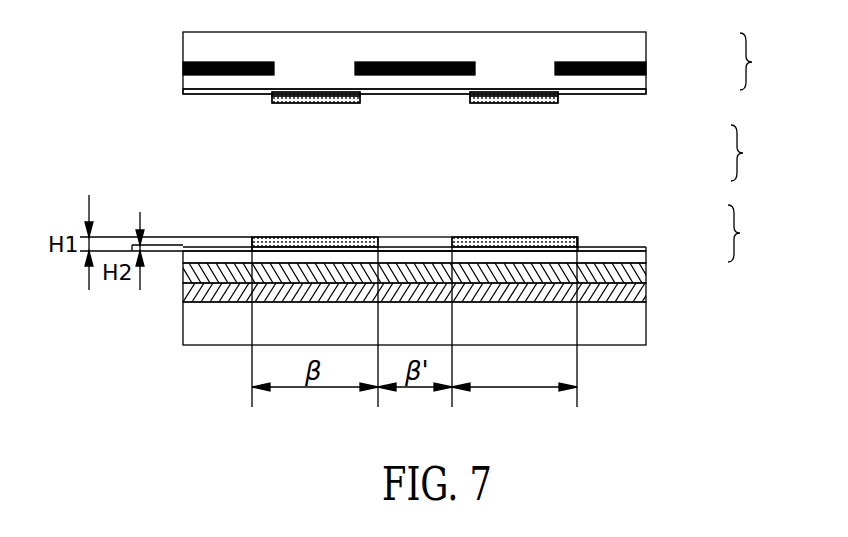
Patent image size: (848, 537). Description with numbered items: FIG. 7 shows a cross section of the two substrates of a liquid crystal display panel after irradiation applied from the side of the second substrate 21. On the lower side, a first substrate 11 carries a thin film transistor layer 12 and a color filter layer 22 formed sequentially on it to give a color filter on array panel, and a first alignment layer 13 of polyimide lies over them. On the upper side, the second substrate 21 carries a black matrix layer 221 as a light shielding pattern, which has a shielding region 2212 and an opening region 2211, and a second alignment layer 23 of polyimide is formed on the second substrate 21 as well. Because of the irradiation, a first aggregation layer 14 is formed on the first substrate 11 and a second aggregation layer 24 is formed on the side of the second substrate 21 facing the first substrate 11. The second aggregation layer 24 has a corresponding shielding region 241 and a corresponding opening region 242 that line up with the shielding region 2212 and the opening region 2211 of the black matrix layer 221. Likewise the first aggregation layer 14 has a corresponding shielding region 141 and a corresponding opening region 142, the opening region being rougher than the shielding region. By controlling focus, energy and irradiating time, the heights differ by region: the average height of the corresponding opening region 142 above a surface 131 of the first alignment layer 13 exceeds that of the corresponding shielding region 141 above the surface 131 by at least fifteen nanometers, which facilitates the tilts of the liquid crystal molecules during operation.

The second substrate 21 is at (638, 43).
The shielding region 2212 is at (647, 68).
The opening region 2211 is at (650, 77).
The black matrix layer 221 is at (769, 61).
The second alignment layer 23 is at (648, 90).
The corresponding shielding region 241 is at (632, 96).
The corresponding opening region 242 is at (557, 102).
The second aggregation layer 24 is at (522, 136).
The first substrate 11 is at (640, 335).
The thin film transistor layer 12 is at (642, 297).
The color filter layer 22 is at (643, 273).
The first alignment layer 13 is at (643, 260).
The surface 131 is at (231, 250).
The corresponding shielding region 141 is at (645, 249).
The corresponding opening region 142 is at (545, 237).
The first aggregation layer 14 is at (512, 233).